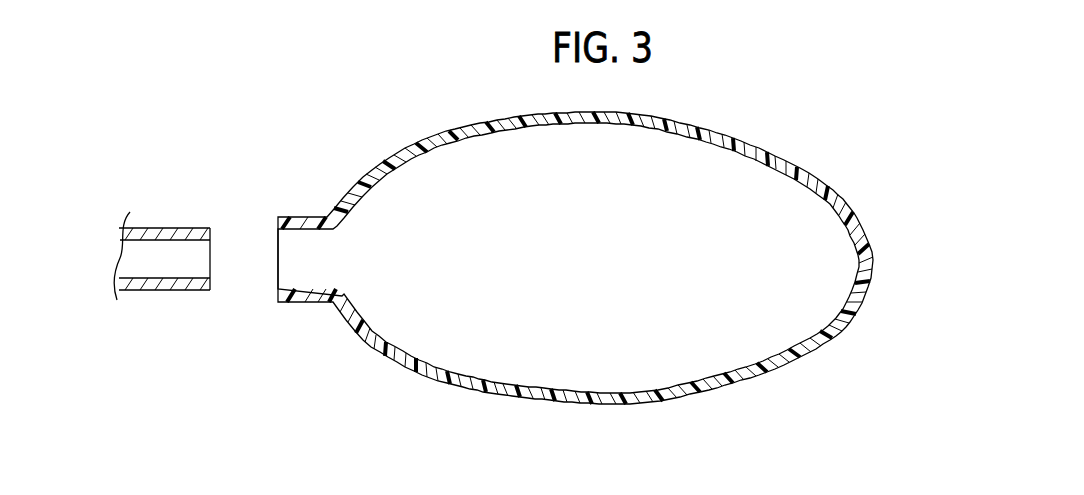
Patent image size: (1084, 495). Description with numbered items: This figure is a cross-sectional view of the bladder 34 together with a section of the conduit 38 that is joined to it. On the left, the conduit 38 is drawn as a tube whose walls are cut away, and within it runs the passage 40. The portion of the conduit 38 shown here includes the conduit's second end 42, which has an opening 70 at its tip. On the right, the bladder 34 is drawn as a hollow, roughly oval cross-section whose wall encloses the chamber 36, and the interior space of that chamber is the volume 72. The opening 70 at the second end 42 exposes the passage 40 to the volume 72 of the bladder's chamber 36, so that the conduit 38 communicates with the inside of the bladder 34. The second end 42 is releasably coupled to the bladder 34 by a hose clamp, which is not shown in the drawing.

The bladder 34 is at (582, 235).
The chamber 36 is at (772, 148).
The volume 72 is at (797, 212).
The second end 42 is at (192, 267).
The conduit 38 is at (147, 290).
The passage 40 is at (183, 263).
The opening 70 is at (210, 257).